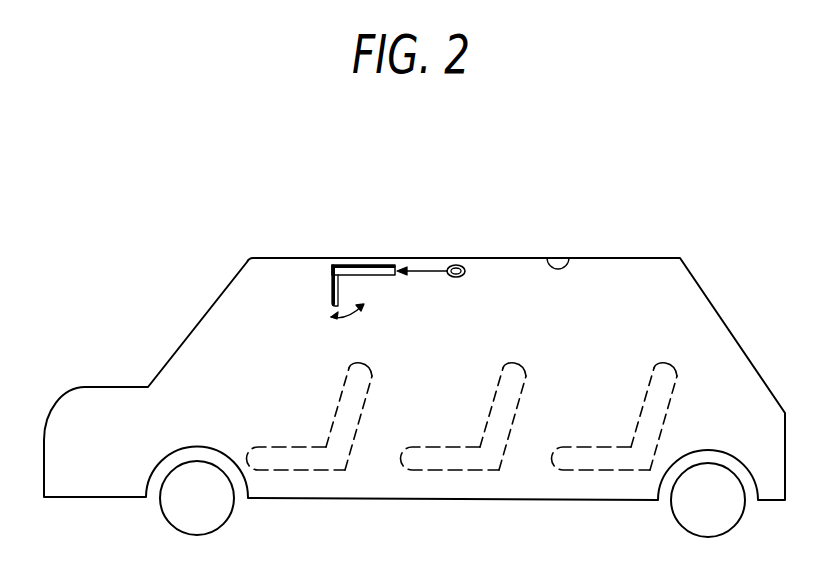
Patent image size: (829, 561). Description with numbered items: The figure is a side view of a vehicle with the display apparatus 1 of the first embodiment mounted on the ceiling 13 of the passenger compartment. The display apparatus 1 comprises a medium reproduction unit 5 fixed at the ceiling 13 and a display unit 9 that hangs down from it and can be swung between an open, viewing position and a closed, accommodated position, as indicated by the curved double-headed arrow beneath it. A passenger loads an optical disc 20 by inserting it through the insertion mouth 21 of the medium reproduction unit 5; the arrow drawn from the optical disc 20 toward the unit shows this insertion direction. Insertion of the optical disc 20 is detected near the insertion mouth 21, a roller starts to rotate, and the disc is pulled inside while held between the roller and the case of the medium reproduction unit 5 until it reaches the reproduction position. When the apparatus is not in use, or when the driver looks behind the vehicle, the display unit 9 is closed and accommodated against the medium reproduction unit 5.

The display apparatus 1 is at (342, 262).
The medium reproduction unit 5 is at (377, 263).
The display unit 9 is at (329, 294).
The ceiling 13 is at (568, 257).
The optical disc 20 is at (462, 262).
The insertion mouth 21 is at (400, 274).